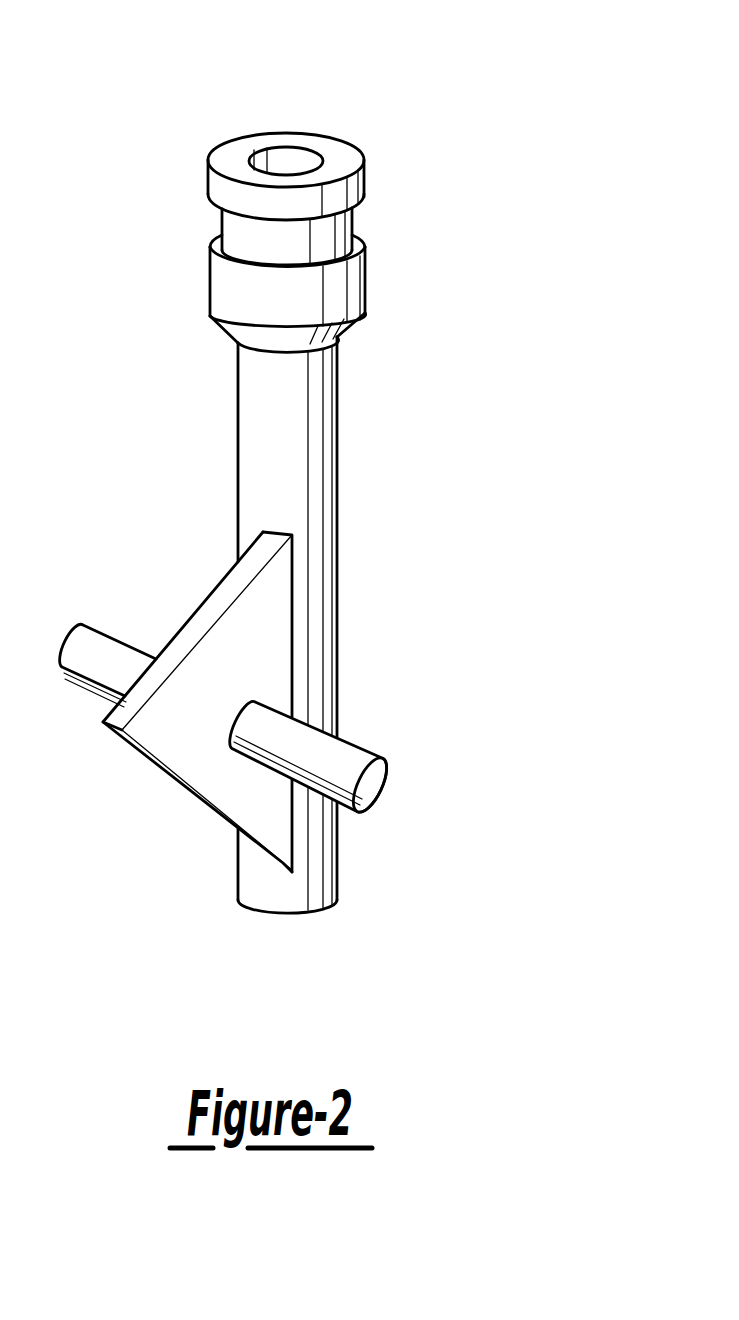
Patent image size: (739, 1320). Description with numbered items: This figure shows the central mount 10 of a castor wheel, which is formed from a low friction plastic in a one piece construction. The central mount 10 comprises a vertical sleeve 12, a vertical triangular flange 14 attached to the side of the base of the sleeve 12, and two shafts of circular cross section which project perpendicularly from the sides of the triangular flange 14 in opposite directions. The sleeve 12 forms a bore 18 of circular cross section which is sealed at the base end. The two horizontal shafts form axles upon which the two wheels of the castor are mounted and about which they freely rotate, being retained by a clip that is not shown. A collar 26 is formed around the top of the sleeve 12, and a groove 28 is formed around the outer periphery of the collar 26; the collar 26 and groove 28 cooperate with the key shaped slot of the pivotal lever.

The central mount 10 is at (327, 485).
The vertical sleeve 12 is at (250, 437).
The vertical triangular flange 14 is at (178, 748).
The bore 18 is at (300, 157).
The collar 26 is at (222, 288).
The groove 28 is at (232, 229).